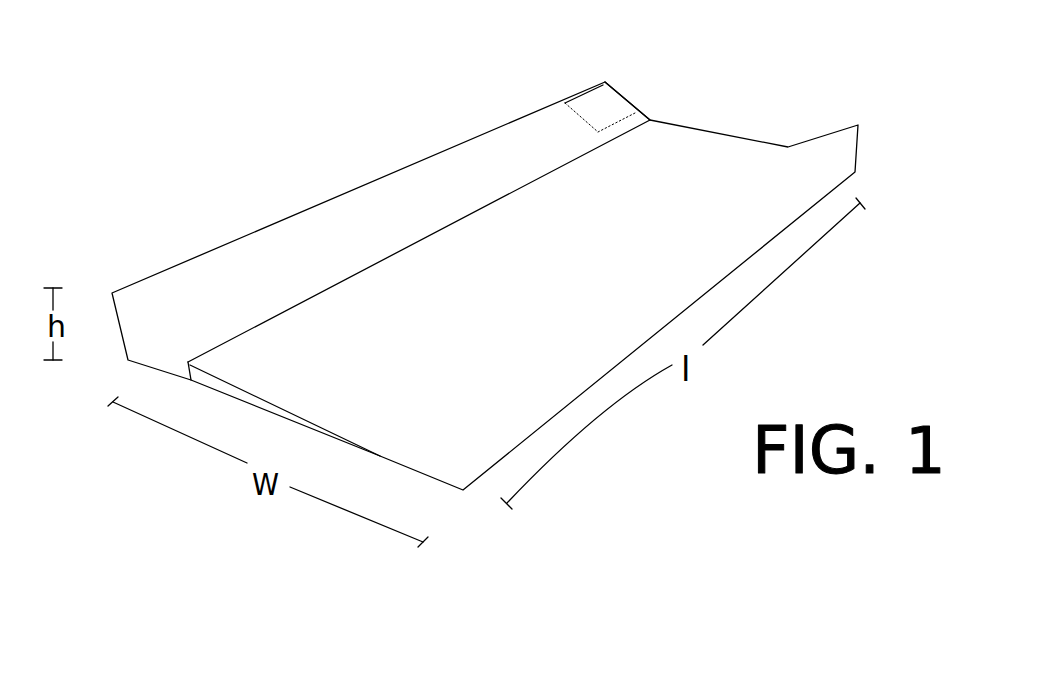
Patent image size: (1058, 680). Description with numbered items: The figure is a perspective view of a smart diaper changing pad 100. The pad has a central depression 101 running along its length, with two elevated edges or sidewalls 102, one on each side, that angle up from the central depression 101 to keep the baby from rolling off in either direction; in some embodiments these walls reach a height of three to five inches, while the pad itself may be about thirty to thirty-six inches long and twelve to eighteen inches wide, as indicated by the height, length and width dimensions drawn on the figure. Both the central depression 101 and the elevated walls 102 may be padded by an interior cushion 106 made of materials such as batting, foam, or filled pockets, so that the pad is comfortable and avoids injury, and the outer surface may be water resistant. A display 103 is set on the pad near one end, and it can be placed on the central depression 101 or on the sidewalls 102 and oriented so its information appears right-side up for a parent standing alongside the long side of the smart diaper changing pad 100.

The smart diaper changing pad 100 is at (242, 215).
The central depression 101 is at (698, 145).
The elevated edges or sidewalls 102 is at (503, 127).
The display 103 is at (603, 97).
The interior cushion 106 is at (327, 427).